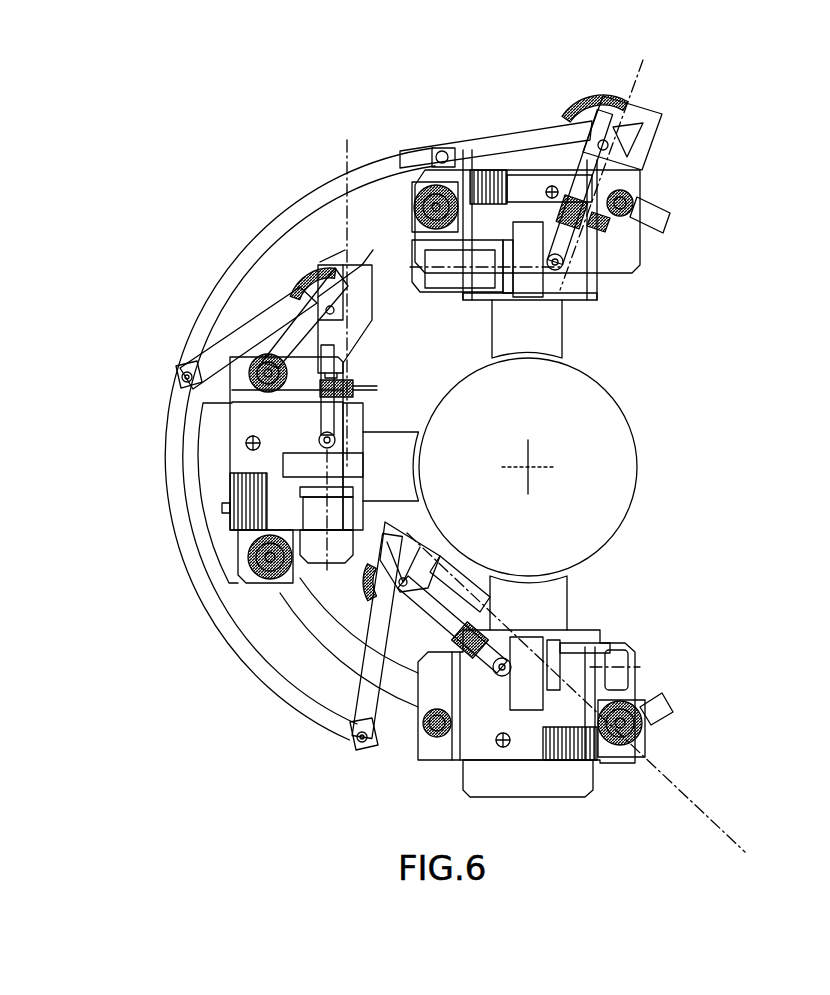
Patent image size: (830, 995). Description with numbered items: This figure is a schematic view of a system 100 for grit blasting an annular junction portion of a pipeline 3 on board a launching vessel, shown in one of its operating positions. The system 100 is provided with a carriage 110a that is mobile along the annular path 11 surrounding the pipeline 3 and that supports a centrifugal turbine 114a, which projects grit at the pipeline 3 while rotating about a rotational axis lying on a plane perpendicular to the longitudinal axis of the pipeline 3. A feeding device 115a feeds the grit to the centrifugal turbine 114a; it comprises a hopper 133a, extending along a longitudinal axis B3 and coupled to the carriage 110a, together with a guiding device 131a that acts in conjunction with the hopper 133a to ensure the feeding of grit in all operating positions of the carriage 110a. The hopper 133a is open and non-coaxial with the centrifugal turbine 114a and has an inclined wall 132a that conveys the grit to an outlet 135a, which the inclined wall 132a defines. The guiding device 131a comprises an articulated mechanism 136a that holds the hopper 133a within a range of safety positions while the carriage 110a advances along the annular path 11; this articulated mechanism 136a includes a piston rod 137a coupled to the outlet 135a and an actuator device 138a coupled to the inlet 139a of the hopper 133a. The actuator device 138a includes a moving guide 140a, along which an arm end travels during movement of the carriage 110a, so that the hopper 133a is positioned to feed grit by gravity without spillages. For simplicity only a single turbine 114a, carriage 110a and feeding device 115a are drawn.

The pipeline 3 is at (626, 404).
The annular path 11 is at (360, 265).
The system 100 is at (713, 771).
The carriage 110a is at (638, 188).
The centrifugal turbine 114a is at (385, 212).
The feeding device 115a is at (300, 272).
The guiding device 131a is at (680, 212).
The inclined wall 132a is at (595, 209).
The hopper 133a is at (624, 98).
The outlet 135a is at (600, 218).
The articulated mechanism 136a is at (517, 118).
The piston rod 137a is at (560, 252).
The actuator device 138a is at (571, 102).
The inlet 139a is at (663, 118).
The moving guide 140a is at (253, 253).
The longitudinal axis B3 is at (345, 150).